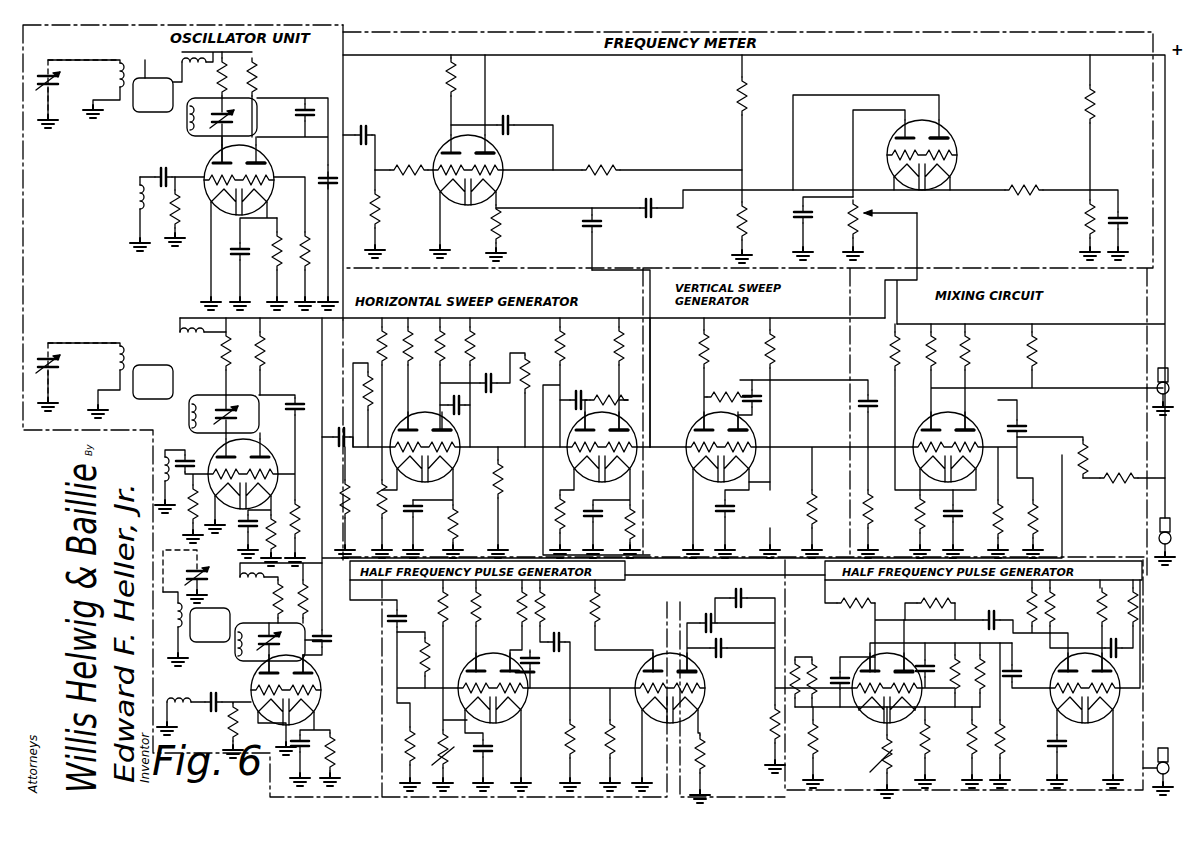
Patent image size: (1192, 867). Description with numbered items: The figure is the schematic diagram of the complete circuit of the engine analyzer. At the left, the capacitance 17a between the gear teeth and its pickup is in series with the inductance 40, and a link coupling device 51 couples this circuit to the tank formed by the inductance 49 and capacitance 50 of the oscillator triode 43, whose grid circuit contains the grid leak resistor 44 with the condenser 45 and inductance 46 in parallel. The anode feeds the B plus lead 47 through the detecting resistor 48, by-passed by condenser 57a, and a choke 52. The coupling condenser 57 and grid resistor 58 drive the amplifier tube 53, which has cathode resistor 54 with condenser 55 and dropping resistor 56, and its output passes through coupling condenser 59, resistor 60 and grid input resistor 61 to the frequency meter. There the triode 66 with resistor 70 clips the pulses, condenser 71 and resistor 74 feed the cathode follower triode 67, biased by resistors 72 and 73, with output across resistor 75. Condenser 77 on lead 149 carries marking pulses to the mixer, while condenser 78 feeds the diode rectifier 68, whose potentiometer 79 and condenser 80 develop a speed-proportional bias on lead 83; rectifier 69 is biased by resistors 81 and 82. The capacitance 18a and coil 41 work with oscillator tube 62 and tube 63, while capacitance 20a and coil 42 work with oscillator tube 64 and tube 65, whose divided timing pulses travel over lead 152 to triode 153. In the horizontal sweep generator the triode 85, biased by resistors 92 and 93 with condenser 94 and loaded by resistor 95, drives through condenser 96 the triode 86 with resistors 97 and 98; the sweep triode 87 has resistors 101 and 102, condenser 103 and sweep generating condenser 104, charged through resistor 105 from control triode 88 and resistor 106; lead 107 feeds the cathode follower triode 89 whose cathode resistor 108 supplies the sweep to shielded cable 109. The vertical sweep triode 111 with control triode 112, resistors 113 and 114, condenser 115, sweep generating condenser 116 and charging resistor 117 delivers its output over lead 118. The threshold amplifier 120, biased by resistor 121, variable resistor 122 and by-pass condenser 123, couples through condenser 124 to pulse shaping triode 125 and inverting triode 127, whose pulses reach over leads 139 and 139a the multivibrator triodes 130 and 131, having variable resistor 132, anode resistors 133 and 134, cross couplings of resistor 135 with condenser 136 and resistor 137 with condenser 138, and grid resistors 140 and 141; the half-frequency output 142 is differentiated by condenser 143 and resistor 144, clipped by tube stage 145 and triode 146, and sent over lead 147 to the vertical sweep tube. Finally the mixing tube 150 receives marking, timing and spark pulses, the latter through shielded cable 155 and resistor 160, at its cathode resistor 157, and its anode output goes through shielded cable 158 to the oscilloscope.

The capacitance 17a is at (53, 80).
The inductance 40 is at (110, 72).
The link coupling device 51 is at (153, 78).
The choke 52 is at (205, 66).
The detecting or load resistor 48 is at (216, 80).
The dropping resistor 56 is at (258, 78).
The inductance 49 is at (207, 117).
The capacitance 50 is at (229, 130).
The coupling condenser 57 is at (292, 131).
The triode 43 is at (204, 168).
The amplifier tube 53 is at (265, 158).
The condenser 45 is at (158, 170).
The inductance 46 is at (135, 203).
The grid leak resistor 44 is at (182, 210).
The grid resistor 58 is at (300, 230).
The condenser 55 is at (236, 260).
The resistor 54 is at (272, 258).
The B plus lead 47 is at (577, 56).
The resistor 70 is at (448, 94).
The condenser 71 is at (510, 118).
The triode 66 is at (446, 150).
The triode 67 is at (501, 150).
The coupling condenser 59 is at (369, 141).
The condenser 57a is at (359, 165).
The grid input resistor 61 is at (404, 181).
The resistor 60 is at (382, 212).
The resistor 75 is at (502, 218).
The resistor 74 is at (614, 166).
The condenser 77 is at (586, 234).
The lead 149 is at (604, 244).
The condenser 78 is at (654, 206).
The resistor 72 is at (738, 112).
The resistor 73 is at (738, 234).
The diode rectifier 68 is at (892, 138).
The rectifier 69 is at (958, 144).
The potentiometer 79 is at (848, 228).
The condenser 80 is at (798, 220).
The lead 83 is at (918, 238).
The resistor 81 is at (1084, 114).
The resistor 82 is at (1084, 222).
The capacitance 18a is at (56, 368).
The coil 41 is at (128, 352).
The oscillator tube 62 is at (214, 462).
The resistor 92 is at (374, 346).
The tube 63 is at (272, 456).
The capacitance 20a is at (202, 570).
The coil 42 is at (183, 644).
The oscillator tube 64 is at (256, 672).
The tube 65 is at (318, 674).
The lead 152 is at (348, 620).
The resistor 95 is at (408, 357).
The resistor 93 is at (378, 496).
The triode 85 is at (404, 436).
The triode 86 is at (452, 458).
The resistor 98 is at (446, 350).
The condenser 96 is at (466, 406).
The resistor 97 is at (474, 352).
The condenser 94 is at (414, 510).
The lead 107 is at (532, 520).
The resistor 101 is at (564, 352).
The sweep generating condenser 104 is at (574, 400).
The resistor 105 is at (606, 403).
The resistor 106 is at (629, 374).
The triode 87 is at (570, 434).
The triode 88 is at (630, 434).
The resistor 102 is at (560, 522).
The condenser 103 is at (592, 504).
The control triode 112 is at (686, 448).
The charging resistor 117 is at (720, 388).
The sweep generating condenser 116 is at (756, 386).
The resistor 113 is at (774, 346).
The lead 118 is at (810, 382).
The triode 111 is at (754, 426).
The lead 147 is at (814, 446).
The resistor 114 is at (774, 496).
The condenser 115 is at (728, 512).
The mixing tube 150 is at (924, 430).
The triode 153 is at (954, 410).
The cathode resistor 157 is at (920, 524).
The resistor 160 is at (1104, 474).
The shielded cable 158 is at (1168, 382).
The shielded cable 155 is at (1156, 532).
The resistor 121 is at (440, 608).
The variable resistor 122 is at (428, 732).
The threshold amplifier 120 is at (464, 672).
The condenser 124 is at (546, 662).
The pulse shaping triode 125 is at (540, 702).
The by-pass condenser 123 is at (500, 738).
The triode 127 is at (646, 694).
The triode 89 is at (704, 672).
The lead 139 is at (760, 624).
The cathode resistor 108 is at (704, 744).
The lead 139a is at (792, 616).
The resistor 133 is at (864, 600).
The resistor 134 is at (942, 604).
The resistor 135 is at (812, 660).
The condenser 136 is at (844, 664).
The triode 130 is at (850, 716).
The triode 131 is at (920, 712).
The condenser 138 is at (924, 662).
The resistor 137 is at (958, 680).
The resistor 140 is at (820, 742).
The variable resistor 132 is at (876, 756).
The resistor 141 is at (930, 752).
The resistor 144 is at (974, 744).
The output of the half frequency generating tube 142 is at (1006, 732).
The condenser 143 is at (1014, 684).
The tube stage 145 is at (1060, 734).
The triode 146 is at (1108, 730).
The shielded cable 109 is at (1168, 762).